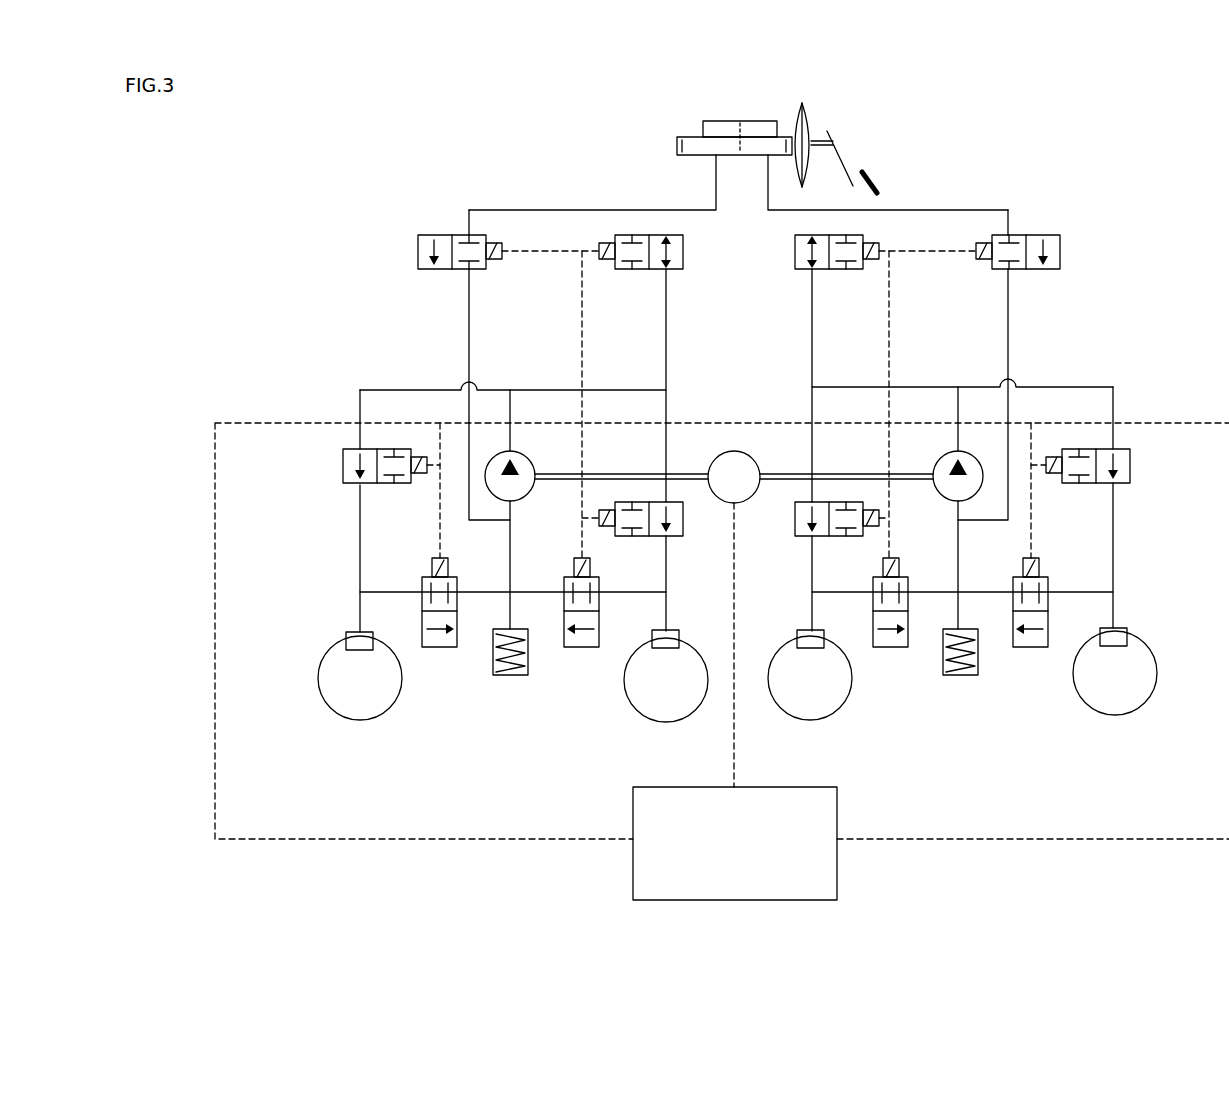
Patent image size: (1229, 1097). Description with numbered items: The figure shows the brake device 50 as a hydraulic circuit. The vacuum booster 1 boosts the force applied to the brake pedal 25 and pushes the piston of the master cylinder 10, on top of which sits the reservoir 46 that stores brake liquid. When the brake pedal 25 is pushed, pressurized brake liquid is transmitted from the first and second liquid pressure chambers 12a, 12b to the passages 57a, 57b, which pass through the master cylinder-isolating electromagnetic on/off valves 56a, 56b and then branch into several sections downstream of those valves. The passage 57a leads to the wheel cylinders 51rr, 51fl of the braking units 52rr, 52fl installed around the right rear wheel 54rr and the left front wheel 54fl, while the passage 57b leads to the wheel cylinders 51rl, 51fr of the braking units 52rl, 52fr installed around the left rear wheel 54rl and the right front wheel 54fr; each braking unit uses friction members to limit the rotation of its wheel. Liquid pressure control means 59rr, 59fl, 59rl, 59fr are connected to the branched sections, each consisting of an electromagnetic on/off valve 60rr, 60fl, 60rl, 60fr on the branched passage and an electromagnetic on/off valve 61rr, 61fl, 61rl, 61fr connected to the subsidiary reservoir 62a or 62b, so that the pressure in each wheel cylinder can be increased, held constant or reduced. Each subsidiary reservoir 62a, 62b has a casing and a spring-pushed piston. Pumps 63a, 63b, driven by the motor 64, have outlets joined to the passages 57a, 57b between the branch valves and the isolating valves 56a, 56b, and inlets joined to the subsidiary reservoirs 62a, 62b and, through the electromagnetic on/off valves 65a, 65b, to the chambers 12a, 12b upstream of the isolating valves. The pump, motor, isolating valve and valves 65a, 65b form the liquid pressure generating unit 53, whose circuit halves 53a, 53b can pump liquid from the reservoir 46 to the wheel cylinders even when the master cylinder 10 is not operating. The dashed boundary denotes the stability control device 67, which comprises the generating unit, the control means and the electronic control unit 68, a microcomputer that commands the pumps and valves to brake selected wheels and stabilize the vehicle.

The vacuum booster 1 is at (807, 112).
The master cylinder 10 is at (688, 134).
The first liquid pressure chamber 12a is at (762, 156).
The second liquid pressure chamber 12b is at (690, 156).
The brake pedal 25 is at (872, 183).
The reservoir 46 is at (732, 128).
The brake device 50 is at (355, 238).
The wheel cylinder 51rl is at (350, 630).
The wheel cylinder 51fr is at (656, 634).
The wheel cylinder 51fl is at (820, 636).
The wheel cylinder 51rr is at (1115, 630).
The braking unit 52rl is at (340, 637).
The braking unit 52fr is at (680, 628).
The braking unit 52fl is at (796, 628).
The braking unit 52rr is at (1130, 630).
The liquid pressure generating unit 53 is at (770, 414).
The liquid pressure generating unit 53a is at (1025, 360).
The liquid pressure generating unit 53b is at (432, 372).
The left rear wheel 54rl is at (333, 704).
The right front wheel 54fr is at (684, 700).
The left front wheel 54fl is at (782, 700).
The right rear wheel 54rr is at (1135, 695).
The master cylinder-isolating electromagnetic on/off valve 56a is at (862, 243).
The master cylinder-isolating electromagnetic on/off valve 56b is at (598, 246).
The passage 57a is at (768, 210).
The passage 57b is at (715, 210).
The liquid pressure control means 59rl is at (438, 652).
The liquid pressure control means 59fr is at (582, 652).
The liquid pressure control means 59fl is at (890, 652).
The liquid pressure control means 59rr is at (1030, 652).
The electromagnetic on/off valve 60rl is at (342, 467).
The electromagnetic on/off valve 60fr is at (683, 538).
The electromagnetic on/off valve 60fl is at (795, 540).
The electromagnetic on/off valve 60rr is at (1131, 465).
The electromagnetic on/off valve 61rl is at (424, 581).
The electromagnetic on/off valve 61fr is at (564, 584).
The electromagnetic on/off valve 61fl is at (906, 578).
The electromagnetic on/off valve 61rr is at (1048, 580).
The subsidiary reservoir 62a is at (961, 676).
The subsidiary reservoir 62b is at (511, 676).
The pump 63a is at (935, 466).
The pump 63b is at (535, 468).
The motor 64 is at (724, 460).
The electromagnetic on/off valve 65a is at (1047, 234).
The electromagnetic on/off valve 65b is at (432, 234).
The stability control device 67 is at (628, 855).
The electronic control unit 68 is at (770, 888).